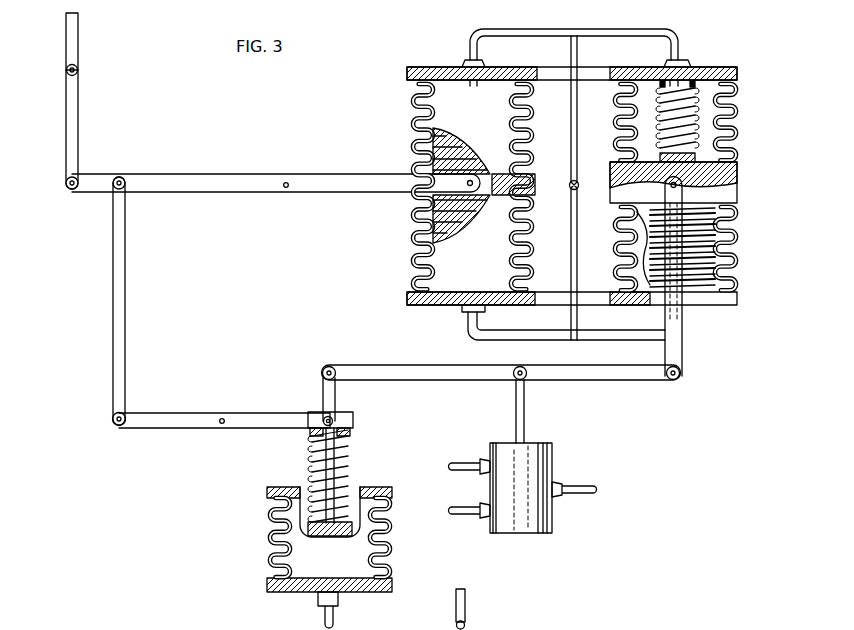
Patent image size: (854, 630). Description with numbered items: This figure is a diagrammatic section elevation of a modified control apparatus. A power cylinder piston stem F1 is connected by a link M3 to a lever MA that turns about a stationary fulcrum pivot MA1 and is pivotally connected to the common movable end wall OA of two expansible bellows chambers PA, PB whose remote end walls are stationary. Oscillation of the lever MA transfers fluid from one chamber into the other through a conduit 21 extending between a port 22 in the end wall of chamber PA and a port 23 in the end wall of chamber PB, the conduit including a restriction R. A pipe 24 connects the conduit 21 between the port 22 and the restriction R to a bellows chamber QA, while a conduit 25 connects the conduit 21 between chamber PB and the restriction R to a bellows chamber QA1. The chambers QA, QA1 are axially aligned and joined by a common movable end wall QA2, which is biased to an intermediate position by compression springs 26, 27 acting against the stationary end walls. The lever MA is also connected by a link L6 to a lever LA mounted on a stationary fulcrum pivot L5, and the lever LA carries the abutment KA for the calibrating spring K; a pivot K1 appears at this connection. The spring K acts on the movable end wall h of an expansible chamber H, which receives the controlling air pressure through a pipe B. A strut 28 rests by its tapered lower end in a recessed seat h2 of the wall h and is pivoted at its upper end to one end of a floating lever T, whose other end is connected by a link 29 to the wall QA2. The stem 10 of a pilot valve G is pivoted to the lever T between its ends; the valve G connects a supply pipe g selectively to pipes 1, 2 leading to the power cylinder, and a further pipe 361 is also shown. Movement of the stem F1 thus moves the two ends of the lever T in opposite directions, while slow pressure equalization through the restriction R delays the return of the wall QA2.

The piston stem F1 is at (75, 46).
The link M3 is at (74, 119).
The lever MA is at (225, 177).
The stationary fulcrum pivot MA1 is at (286, 189).
The link L6 is at (121, 285).
The lever LA is at (185, 422).
The stationary fulcrum pivot L5 is at (224, 423).
The pivot pin K1 is at (326, 415).
The strut 28 is at (331, 391).
The abutment KA is at (352, 421).
The calibrating spring K is at (344, 462).
The expansible chamber H is at (284, 556).
The recessed seat h2 is at (337, 537).
The movable end wall h is at (361, 530).
The pipe B is at (333, 612).
The floating lever T is at (572, 371).
The valve stem 10 is at (520, 410).
The pilot valve G is at (503, 449).
The pipe 1 is at (467, 463).
The pipe 2 is at (467, 507).
The pressure supply pipe g is at (574, 487).
The pipe 36' 361 is at (466, 626).
The port 22 is at (475, 81).
The pipe 24 is at (595, 38).
The port 23 is at (471, 304).
The conduit 25 is at (605, 335).
The conduit 21 is at (571, 239).
The restriction R is at (576, 181).
The common movable end wall OA is at (536, 178).
The expansible bellows chamber PA is at (432, 112).
The expansible bellows chamber PB is at (432, 258).
The compression spring 26 is at (660, 118).
The bellows chamber QA is at (704, 133).
The common movable end wall member QA2 is at (726, 194).
The link 29 is at (683, 357).
The bellows chamber QA1 is at (639, 247).
The compression spring 27 is at (735, 240).